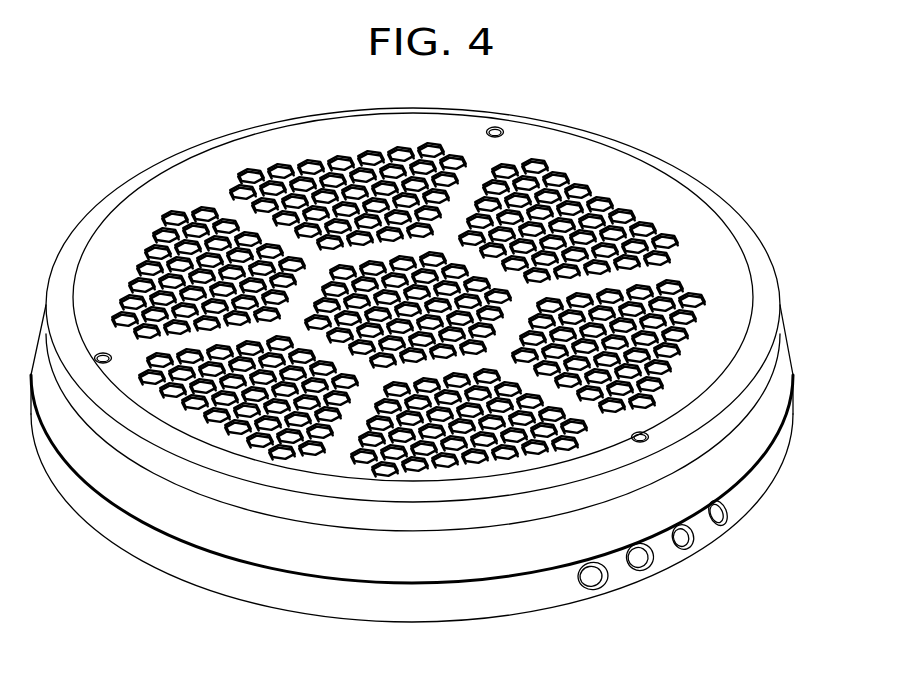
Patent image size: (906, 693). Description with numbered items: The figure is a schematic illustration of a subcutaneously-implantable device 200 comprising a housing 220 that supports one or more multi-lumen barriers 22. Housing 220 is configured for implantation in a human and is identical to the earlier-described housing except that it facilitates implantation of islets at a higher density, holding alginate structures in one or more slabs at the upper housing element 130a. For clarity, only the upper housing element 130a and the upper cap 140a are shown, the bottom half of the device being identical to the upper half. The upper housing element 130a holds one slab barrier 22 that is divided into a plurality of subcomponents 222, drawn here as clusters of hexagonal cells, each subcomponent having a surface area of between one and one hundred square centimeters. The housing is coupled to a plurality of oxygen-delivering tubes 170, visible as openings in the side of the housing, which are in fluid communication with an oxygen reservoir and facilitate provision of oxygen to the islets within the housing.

The subcutaneously-implantable device 200 is at (197, 93).
The multi-lumen barrier 22 is at (602, 177).
The housing 220 is at (723, 203).
The subcomponents 222 is at (333, 265).
The upper cap 140a is at (127, 473).
The upper housing element 130a is at (327, 595).
The oxygen-delivering tubes 170 is at (698, 552).